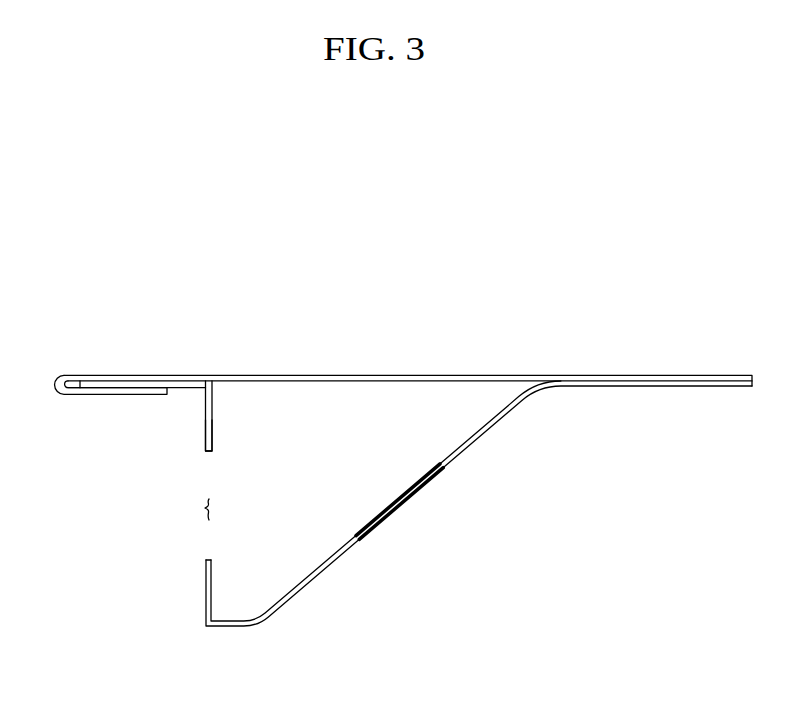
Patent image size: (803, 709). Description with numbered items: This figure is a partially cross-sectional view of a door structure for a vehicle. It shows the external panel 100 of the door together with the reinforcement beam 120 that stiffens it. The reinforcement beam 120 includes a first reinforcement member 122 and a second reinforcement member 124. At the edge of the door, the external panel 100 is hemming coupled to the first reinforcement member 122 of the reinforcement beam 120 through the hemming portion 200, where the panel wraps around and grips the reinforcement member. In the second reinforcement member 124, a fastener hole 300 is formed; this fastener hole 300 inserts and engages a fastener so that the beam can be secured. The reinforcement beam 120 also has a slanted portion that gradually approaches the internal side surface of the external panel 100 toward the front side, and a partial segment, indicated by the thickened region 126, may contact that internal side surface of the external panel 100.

The external panel 100 is at (312, 380).
The reinforcement beam 120 is at (305, 610).
The first reinforcement member 122 is at (184, 386).
The second reinforcement member 124 is at (210, 424).
The reinforced inclined portion 126 is at (344, 554).
The hemming portion 200 is at (72, 394).
The fastener hole 300 is at (205, 508).